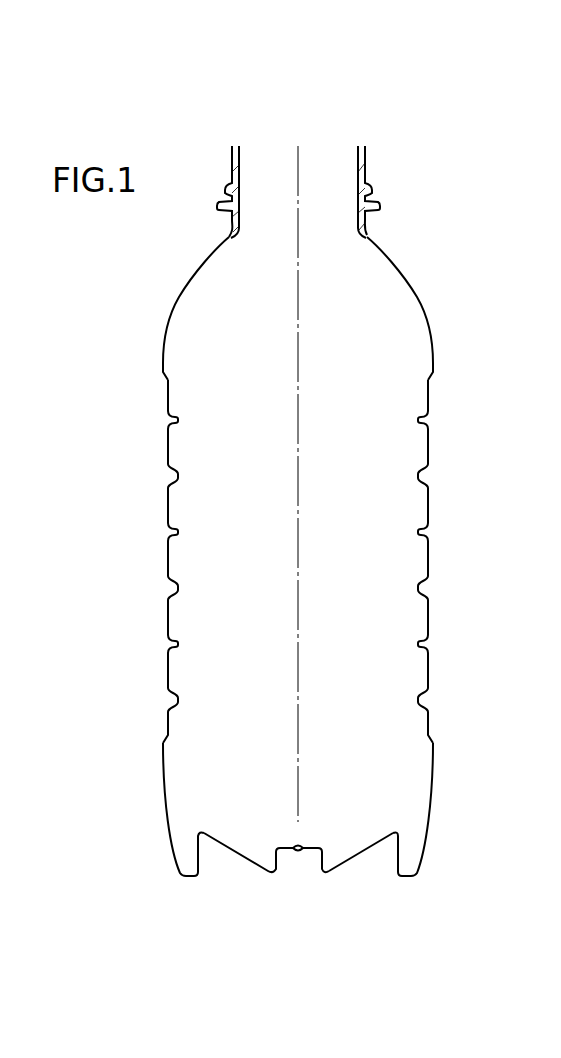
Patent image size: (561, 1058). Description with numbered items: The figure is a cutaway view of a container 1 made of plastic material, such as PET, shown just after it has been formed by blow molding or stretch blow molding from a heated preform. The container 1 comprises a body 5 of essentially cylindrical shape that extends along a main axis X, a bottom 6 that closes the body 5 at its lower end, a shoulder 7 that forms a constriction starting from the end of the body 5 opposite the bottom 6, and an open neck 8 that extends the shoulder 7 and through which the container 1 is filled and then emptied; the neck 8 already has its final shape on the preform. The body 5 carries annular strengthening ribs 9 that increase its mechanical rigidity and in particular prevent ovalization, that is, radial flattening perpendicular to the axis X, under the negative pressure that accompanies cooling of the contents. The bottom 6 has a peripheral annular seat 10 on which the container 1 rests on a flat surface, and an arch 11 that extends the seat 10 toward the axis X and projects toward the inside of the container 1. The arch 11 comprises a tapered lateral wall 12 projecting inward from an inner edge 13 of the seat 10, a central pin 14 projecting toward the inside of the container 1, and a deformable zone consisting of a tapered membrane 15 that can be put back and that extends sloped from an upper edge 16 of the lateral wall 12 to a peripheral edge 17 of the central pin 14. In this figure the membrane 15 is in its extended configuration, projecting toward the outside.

The container 1 is at (430, 252).
The body 5 is at (428, 561).
The bottom 6 is at (309, 847).
The shoulder 7 is at (427, 309).
The neck 8 is at (363, 172).
The annular strengthening ribs 9 is at (156, 420).
The peripheral annular seat 10 is at (407, 877).
The arch 11 is at (233, 864).
The tapered lateral wall 12 is at (397, 852).
The inner edge 13 is at (399, 877).
The central pin 14 is at (276, 846).
The tapered membrane 15 is at (362, 845).
The upper edge 16 is at (395, 830).
The peripheral edge 17 is at (324, 876).
The main axis X is at (299, 420).